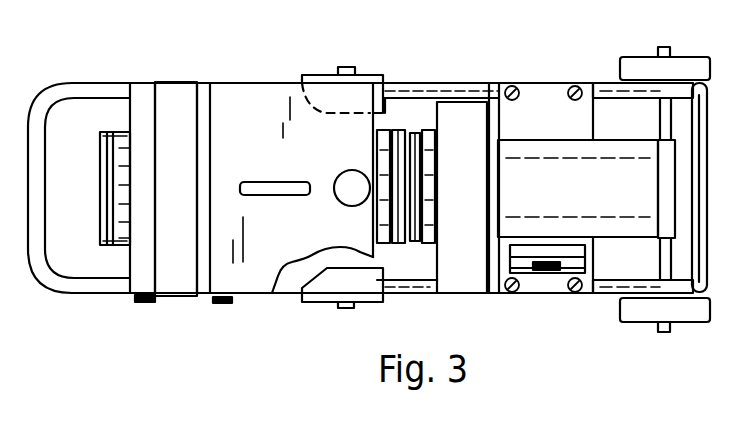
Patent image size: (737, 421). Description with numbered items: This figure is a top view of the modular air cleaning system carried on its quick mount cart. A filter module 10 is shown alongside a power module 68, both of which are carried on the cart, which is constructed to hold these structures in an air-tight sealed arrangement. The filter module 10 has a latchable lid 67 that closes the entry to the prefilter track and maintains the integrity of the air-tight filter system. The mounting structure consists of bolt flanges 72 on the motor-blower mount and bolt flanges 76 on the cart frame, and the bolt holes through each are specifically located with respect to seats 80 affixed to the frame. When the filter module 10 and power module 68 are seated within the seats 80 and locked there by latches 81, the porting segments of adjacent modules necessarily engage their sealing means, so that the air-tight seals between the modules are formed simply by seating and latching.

The filter module 10 is at (231, 68).
The latchable lid 67 is at (176, 120).
The power module 68 is at (582, 201).
The bolt flanges 72 is at (555, 294).
The bolt flanges 76 is at (493, 295).
The seats 80 is at (323, 75).
The latches 81 is at (347, 67).